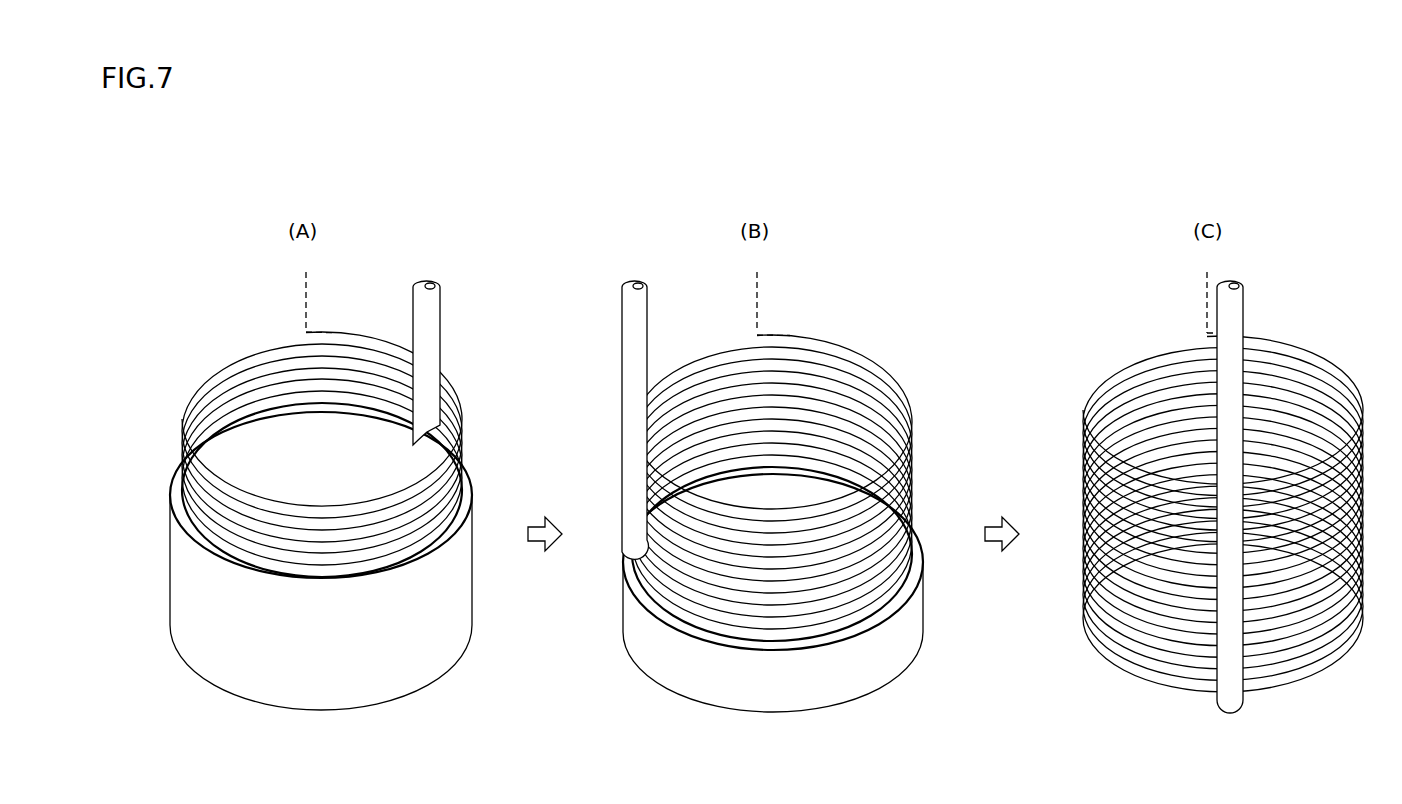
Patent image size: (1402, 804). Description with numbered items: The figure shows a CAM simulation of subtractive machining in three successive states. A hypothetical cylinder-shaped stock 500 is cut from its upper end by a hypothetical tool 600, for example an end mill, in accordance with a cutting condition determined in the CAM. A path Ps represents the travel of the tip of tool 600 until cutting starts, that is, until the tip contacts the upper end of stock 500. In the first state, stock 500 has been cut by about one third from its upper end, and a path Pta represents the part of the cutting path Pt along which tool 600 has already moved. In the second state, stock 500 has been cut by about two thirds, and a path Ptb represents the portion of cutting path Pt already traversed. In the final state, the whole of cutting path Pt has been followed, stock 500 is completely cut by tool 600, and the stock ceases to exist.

The stock 500 is at (320, 690).
The tool 600 is at (432, 327).
The path Ps is at (300, 297).
The path Pta is at (350, 335).
The path Ptb is at (801, 336).
The cutting path Pt is at (1122, 372).